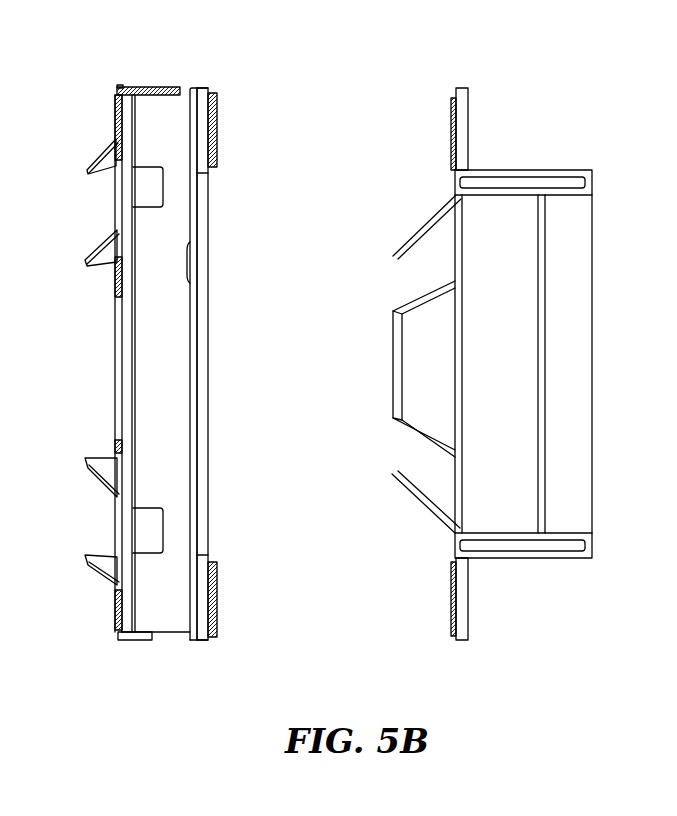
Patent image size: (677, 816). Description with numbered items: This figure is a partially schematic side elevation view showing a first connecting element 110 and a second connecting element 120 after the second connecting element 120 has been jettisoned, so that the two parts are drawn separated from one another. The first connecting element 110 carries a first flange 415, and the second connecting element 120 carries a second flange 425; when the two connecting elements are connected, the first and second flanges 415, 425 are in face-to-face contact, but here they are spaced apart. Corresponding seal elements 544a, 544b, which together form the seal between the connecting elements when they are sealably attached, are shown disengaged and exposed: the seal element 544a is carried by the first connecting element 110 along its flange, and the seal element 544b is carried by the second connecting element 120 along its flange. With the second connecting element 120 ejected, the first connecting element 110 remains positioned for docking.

The first connecting element 110 is at (592, 340).
The second connecting element 120 is at (180, 92).
The first flange 415 is at (463, 622).
The second flange 425 is at (204, 618).
The seal element 544a is at (452, 138).
The seal element 544b is at (216, 116).